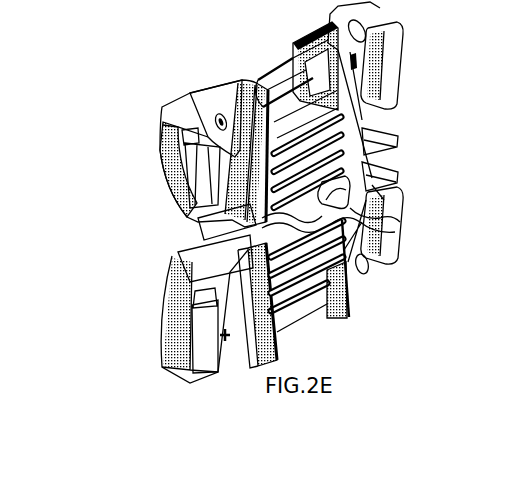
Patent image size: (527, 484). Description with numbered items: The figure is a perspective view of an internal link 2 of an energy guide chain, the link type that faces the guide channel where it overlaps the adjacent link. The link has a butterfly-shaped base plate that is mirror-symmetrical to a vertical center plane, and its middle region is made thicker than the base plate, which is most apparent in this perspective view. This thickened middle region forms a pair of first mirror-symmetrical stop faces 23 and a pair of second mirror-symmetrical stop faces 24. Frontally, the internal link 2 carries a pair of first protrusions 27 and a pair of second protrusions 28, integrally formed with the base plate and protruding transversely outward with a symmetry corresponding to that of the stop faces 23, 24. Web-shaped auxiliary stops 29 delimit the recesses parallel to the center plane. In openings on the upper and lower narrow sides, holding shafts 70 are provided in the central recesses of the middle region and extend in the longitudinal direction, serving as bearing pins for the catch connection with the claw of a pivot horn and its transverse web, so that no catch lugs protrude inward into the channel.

The internal link 2 is at (460, 87).
The first stop faces 23 is at (230, 148).
The second stop faces 24 is at (233, 322).
The first protrusions 27 is at (388, 58).
The second protrusions 28 is at (378, 231).
The auxiliary stops 29 is at (395, 138).
The holding shaft 70 is at (290, 75).